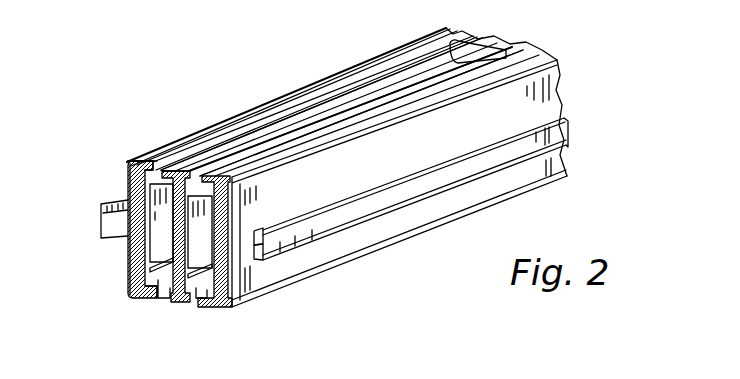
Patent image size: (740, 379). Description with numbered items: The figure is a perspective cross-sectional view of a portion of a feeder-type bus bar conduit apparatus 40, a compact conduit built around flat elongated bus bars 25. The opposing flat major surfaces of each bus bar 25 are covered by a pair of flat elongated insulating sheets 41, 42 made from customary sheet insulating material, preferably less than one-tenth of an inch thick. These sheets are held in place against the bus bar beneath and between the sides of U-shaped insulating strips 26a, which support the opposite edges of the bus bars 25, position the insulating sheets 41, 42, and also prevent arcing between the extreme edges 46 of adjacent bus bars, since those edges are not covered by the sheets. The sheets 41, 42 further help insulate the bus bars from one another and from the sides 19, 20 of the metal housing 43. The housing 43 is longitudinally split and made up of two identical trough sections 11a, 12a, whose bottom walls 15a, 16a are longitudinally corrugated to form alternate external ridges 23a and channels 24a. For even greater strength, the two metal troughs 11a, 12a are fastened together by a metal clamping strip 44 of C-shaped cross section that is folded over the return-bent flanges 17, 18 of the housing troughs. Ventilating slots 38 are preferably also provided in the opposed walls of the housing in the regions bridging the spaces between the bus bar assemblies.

The trough section 11a is at (143, 160).
The trough section 12a is at (128, 298).
The bottom wall 15a is at (290, 127).
The bottom wall 16a is at (172, 303).
The return-bent flange 17 is at (252, 233).
The return-bent flange 18 is at (253, 255).
The side of the metal housing 19 is at (128, 183).
The side of the metal housing 20 is at (130, 273).
The external ridges 23a is at (343, 125).
The channels 24a is at (483, 72).
The bus bars 25 is at (140, 204).
The U-shaped insulating strips 26a is at (215, 308).
The ventilating slots 38 is at (162, 282).
The feeder-type bus bar conduit apparatus 40 is at (203, 135).
The insulating sheet 41 is at (132, 256).
The insulating sheet 42 is at (172, 235).
The metal housing 43 is at (403, 62).
The metal clamping strip 44 is at (350, 203).
The extreme edges 46 is at (178, 175).